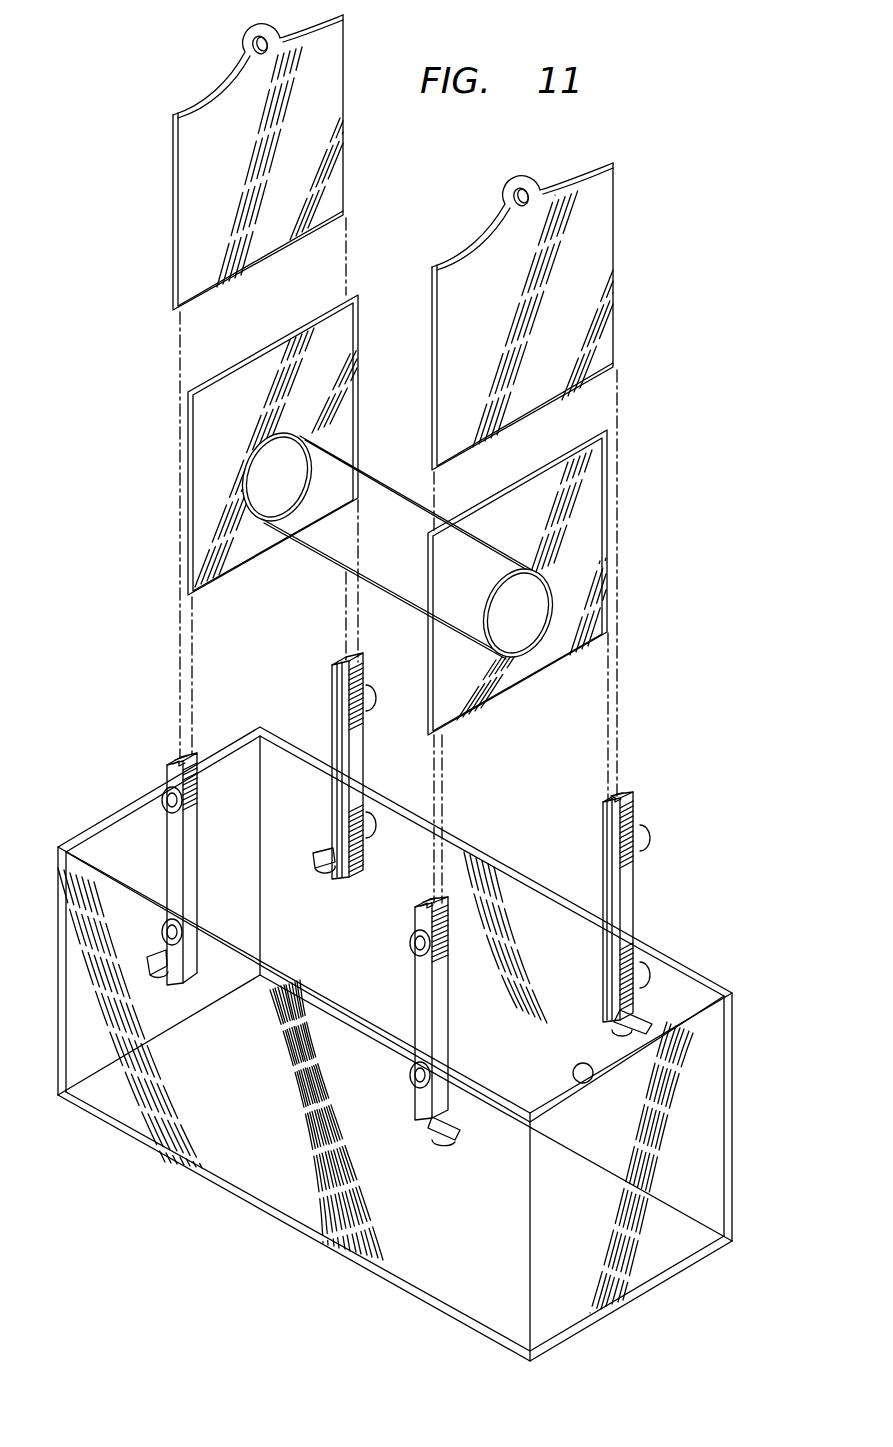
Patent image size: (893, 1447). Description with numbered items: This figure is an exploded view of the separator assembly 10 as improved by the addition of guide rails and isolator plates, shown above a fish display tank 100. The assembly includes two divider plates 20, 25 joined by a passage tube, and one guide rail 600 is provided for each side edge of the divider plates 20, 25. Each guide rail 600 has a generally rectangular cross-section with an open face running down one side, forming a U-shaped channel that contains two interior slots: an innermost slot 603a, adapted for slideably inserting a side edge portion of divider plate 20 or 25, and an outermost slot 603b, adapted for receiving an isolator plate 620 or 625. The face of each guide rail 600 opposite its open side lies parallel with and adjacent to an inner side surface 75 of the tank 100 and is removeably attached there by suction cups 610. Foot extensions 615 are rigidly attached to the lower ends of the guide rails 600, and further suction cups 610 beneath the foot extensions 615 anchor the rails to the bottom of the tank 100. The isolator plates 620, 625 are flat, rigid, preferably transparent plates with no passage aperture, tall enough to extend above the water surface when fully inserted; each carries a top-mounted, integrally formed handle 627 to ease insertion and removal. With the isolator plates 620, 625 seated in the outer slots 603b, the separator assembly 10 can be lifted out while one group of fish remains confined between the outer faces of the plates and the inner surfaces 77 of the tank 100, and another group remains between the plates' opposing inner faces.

The separator assembly 10 is at (662, 379).
The divider plate 20 is at (240, 362).
The divider plate 25 is at (540, 673).
The inner side surface 75 is at (544, 910).
The inner surfaces 77 is at (232, 762).
The fish display tank 100 is at (715, 981).
The guide rail 600 is at (173, 843).
The innermost slot 603a is at (604, 819).
The outermost slot 603b is at (626, 802).
The suction cup 610 is at (158, 806).
The foot extension 615 is at (325, 856).
The isolator plate 620 is at (175, 192).
The isolator plate 625 is at (618, 219).
The handle 627 is at (511, 208).